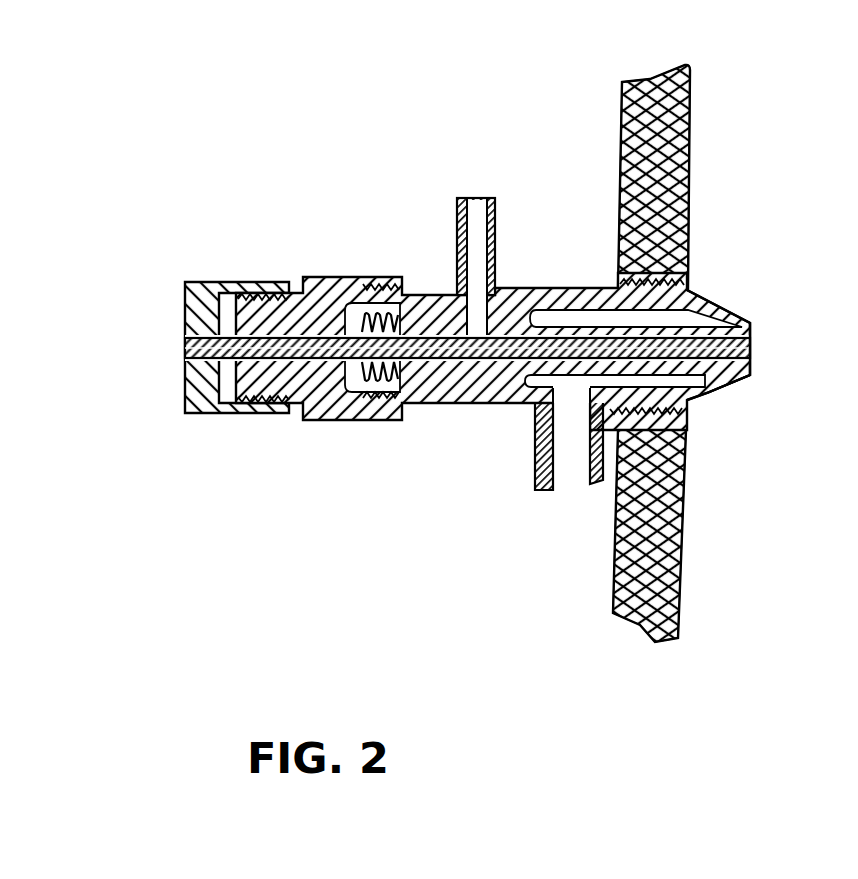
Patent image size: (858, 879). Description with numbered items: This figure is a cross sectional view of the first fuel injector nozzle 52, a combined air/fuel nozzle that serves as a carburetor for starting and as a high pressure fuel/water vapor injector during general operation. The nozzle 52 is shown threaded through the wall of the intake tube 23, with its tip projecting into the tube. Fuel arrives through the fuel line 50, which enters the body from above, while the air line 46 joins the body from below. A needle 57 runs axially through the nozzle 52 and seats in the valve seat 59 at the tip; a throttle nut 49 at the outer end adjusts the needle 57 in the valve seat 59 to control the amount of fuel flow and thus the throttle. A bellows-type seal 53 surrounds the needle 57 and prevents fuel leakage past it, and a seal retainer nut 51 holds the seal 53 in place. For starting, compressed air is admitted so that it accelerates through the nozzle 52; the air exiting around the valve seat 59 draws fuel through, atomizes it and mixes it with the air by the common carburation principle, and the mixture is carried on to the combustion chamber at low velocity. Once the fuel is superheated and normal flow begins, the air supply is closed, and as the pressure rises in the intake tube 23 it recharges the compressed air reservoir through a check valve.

The intake tube 23 is at (618, 172).
The air line 46 is at (536, 468).
The throttle nut 49 is at (213, 281).
The fuel line 50 is at (457, 240).
The seal retainer nut 51 is at (322, 278).
The first fuel injector nozzle 52 is at (352, 521).
The seal 53 is at (360, 367).
The needle 57 is at (751, 350).
The valve seat 59 is at (720, 387).